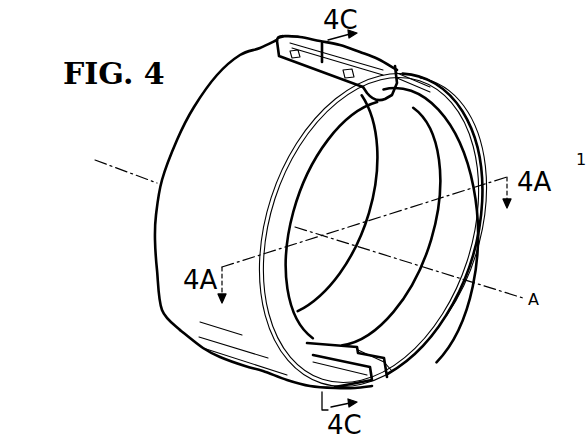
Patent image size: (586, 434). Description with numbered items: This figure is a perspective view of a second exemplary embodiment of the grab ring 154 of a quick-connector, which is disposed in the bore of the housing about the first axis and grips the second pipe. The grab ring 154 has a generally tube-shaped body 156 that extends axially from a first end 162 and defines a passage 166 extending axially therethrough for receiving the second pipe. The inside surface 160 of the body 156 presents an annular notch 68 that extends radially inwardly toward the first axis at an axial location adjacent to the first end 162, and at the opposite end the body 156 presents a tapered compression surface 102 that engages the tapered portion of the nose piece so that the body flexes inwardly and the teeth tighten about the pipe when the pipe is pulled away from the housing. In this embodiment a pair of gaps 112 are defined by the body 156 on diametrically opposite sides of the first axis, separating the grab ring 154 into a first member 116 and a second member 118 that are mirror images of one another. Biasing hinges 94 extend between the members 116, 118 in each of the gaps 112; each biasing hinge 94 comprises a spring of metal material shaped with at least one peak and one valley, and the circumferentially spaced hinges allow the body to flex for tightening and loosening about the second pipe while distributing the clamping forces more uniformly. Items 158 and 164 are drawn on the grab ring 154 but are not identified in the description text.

The annular notch 68 is at (361, 348).
The biasing hinge 94 is at (294, 57).
The compression surface 102 is at (278, 233).
The gap 112 is at (381, 82).
The first member 116 is at (173, 253).
The second member 118 is at (470, 118).
The grab ring 154 is at (444, 86).
The body 156 is at (190, 187).
The flat portion 158 is at (182, 308).
The inside surface 160 is at (382, 272).
The first end 162 is at (210, 87).
The bore edge 164 is at (313, 171).
The passage 166 is at (403, 180).